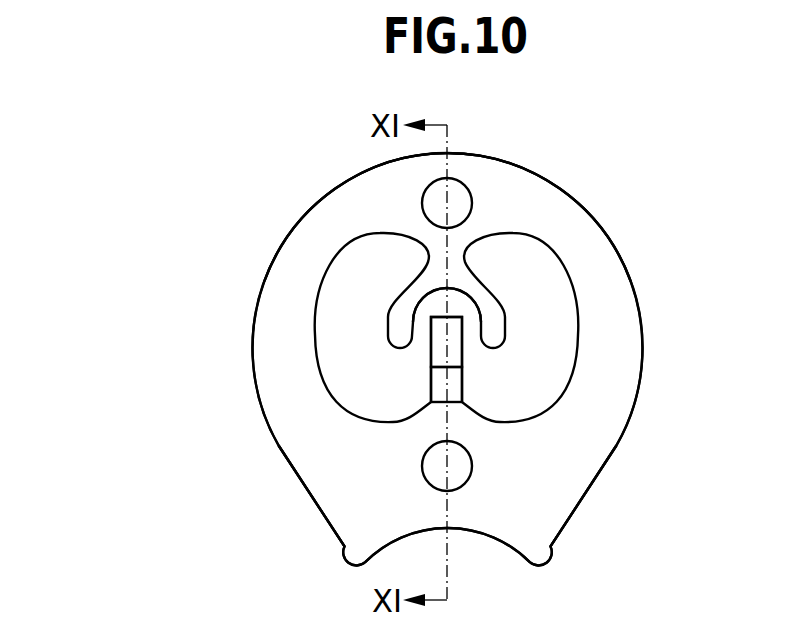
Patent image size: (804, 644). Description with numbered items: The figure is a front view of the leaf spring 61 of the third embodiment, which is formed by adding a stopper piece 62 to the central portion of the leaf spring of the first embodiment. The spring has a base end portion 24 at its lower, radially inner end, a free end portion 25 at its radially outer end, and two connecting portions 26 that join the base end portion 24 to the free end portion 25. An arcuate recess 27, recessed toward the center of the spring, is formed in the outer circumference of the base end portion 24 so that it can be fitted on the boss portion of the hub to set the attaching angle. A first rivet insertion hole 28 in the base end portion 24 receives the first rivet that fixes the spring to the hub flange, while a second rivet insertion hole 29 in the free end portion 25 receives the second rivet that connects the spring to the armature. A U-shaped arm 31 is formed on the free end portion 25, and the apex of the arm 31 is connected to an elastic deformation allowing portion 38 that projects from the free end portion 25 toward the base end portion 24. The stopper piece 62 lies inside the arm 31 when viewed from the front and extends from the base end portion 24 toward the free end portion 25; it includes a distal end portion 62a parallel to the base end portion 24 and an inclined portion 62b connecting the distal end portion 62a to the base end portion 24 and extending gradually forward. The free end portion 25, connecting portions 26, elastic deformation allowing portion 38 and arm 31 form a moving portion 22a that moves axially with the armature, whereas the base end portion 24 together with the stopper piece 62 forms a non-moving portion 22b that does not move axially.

The moving portion 22a is at (128, 150).
The non-moving portion 22b is at (128, 383).
The base end portion 24 is at (396, 467).
The free end portion 25 is at (377, 186).
The connecting portions 26 is at (275, 300).
The arcuate recess 27 is at (484, 540).
The first rivet insertion hole 28 is at (455, 478).
The second rivet insertion hole 29 is at (460, 210).
The U-shaped arm 31 is at (387, 326).
The elastic deformation allowing portion 38 is at (435, 258).
The leaf spring 61 is at (512, 163).
The stopper piece 62 is at (441, 391).
The distal end portion 62a is at (437, 343).
The inclined portion 62b is at (437, 382).